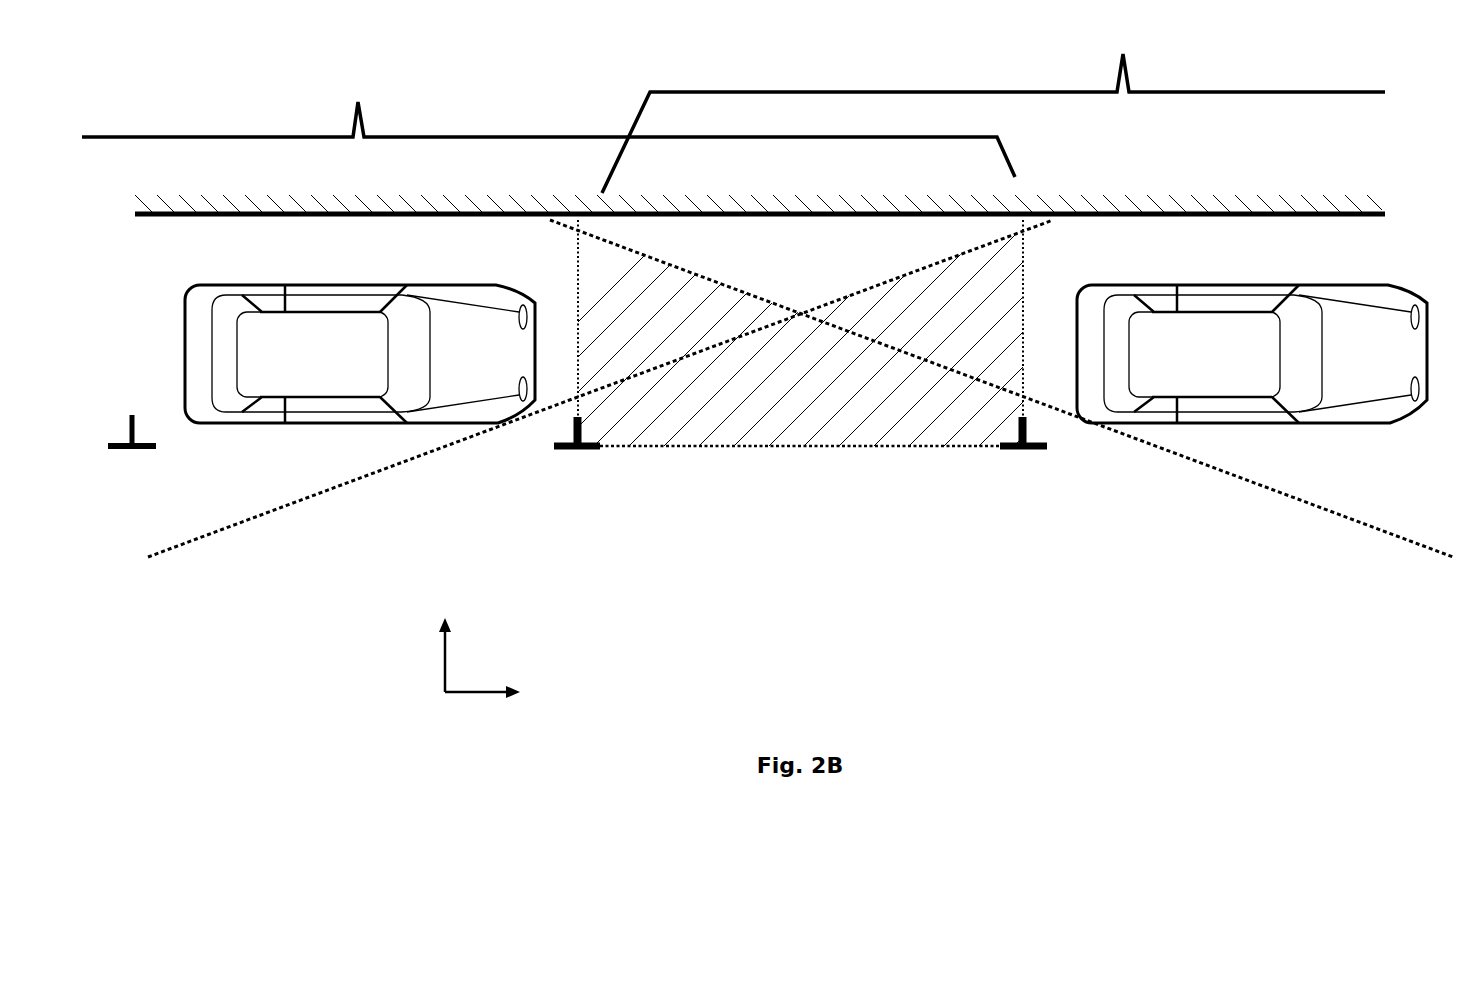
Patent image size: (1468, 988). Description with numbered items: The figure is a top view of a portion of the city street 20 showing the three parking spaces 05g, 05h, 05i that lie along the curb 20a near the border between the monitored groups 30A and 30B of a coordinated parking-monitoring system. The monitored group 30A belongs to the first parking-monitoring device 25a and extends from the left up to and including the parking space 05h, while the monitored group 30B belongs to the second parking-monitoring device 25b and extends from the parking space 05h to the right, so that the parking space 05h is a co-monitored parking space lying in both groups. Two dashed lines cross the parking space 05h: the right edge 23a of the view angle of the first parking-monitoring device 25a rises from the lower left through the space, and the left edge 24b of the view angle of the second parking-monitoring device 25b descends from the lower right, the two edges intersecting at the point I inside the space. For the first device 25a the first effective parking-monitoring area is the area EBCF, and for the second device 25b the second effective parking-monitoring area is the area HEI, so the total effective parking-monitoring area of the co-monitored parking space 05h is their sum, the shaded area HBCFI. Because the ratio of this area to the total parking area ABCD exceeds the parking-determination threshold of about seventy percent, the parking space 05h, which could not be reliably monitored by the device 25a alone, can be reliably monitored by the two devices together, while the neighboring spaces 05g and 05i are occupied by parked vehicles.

The street 20 is at (756, 643).
The curb 20a is at (270, 222).
The monitored group 30A is at (548, 127).
The monitored group 30B is at (993, 113).
The parking space 05g is at (217, 460).
The co-monitored parking space 05h is at (763, 480).
The parking space 05i is at (1369, 465).
The right edge of view angle 23a is at (283, 512).
The left edge of view angle 24b is at (1245, 488).
The parking-monitoring device 25a is at (187, 568).
The parking-monitoring device 25b is at (1430, 568).